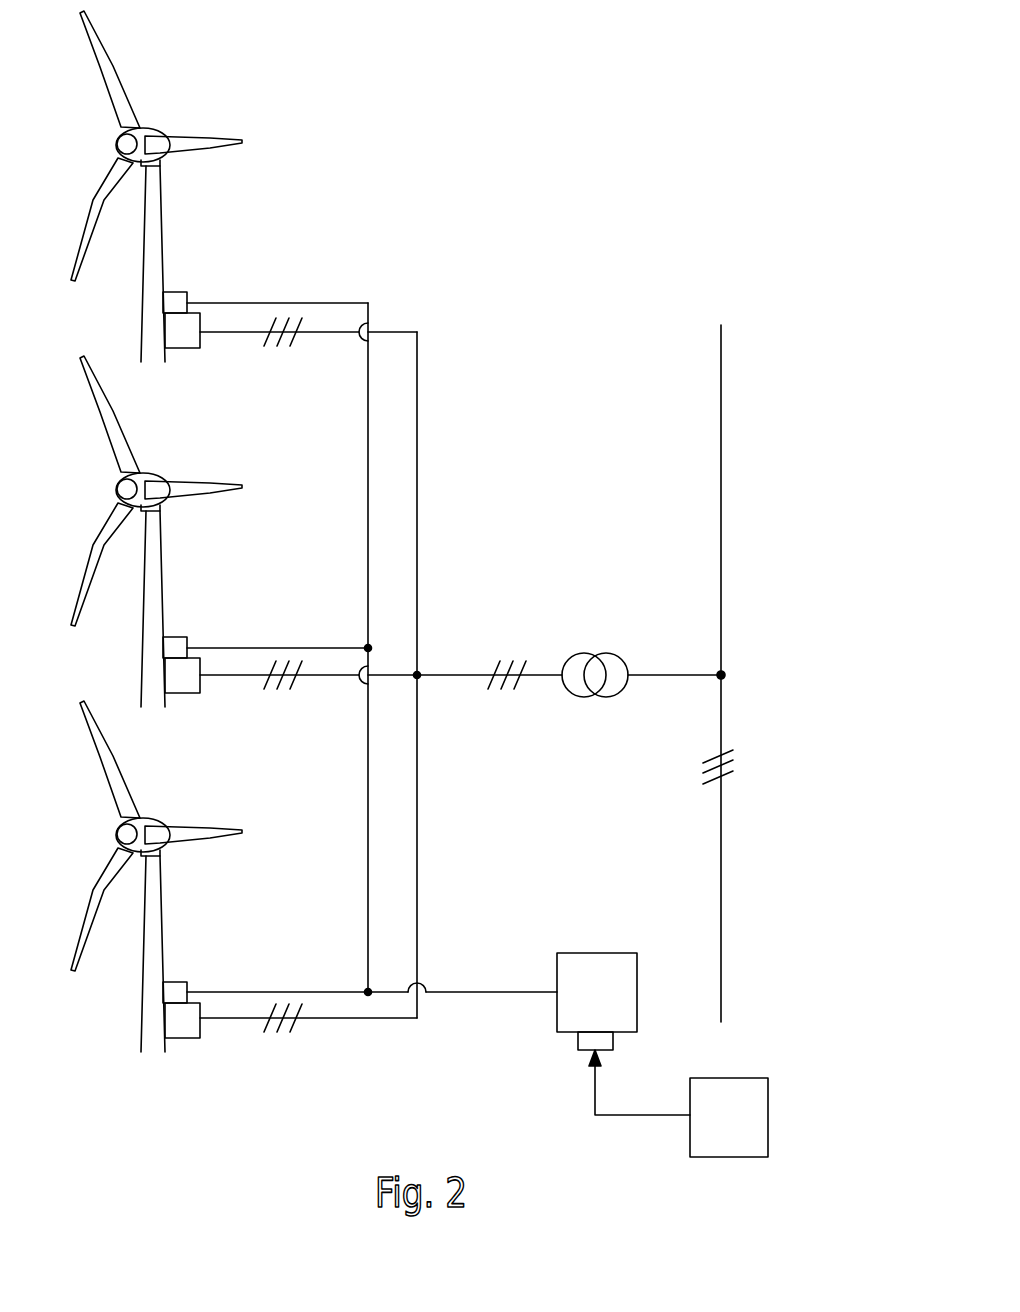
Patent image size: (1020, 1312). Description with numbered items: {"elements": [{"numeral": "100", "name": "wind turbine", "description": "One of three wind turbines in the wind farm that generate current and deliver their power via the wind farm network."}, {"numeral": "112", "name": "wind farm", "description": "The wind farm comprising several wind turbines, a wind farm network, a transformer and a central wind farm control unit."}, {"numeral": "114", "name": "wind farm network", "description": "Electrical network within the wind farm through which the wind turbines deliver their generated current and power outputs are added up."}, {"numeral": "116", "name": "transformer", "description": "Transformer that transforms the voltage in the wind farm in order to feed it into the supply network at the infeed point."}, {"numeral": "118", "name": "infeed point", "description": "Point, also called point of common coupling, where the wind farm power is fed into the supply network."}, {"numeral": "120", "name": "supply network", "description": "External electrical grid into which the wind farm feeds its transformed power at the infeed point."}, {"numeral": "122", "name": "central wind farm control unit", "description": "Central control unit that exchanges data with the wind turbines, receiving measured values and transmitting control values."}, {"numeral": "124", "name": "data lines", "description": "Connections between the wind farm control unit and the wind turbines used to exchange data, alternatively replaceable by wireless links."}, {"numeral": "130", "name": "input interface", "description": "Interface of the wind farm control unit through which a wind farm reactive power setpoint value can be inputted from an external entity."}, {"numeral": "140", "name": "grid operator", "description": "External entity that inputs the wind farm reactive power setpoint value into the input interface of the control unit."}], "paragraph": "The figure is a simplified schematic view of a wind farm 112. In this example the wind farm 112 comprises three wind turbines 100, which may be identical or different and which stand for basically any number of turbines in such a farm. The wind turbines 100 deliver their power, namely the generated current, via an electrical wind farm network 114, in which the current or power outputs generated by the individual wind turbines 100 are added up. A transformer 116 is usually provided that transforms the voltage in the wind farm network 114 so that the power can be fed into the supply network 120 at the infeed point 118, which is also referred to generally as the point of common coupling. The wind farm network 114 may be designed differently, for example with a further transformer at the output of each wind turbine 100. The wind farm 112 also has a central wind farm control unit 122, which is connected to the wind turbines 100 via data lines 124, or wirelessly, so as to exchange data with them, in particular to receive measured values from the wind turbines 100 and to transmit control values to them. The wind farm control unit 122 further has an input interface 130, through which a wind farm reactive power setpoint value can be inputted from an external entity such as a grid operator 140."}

The wind turbine 100 is at (150, 253).
The wind park 112 is at (542, 190).
The connection line to transformer 114 is at (443, 675).
The transformer 116 is at (605, 625).
The point of common coupling (PCC) 118 is at (737, 652).
The electrical grid 120 is at (722, 398).
The park controller 122 is at (588, 953).
The collector network / communication line 124 is at (368, 820).
The interface / input of controller 130 is at (578, 1041).
The network / external unit N 140 is at (713, 1078).